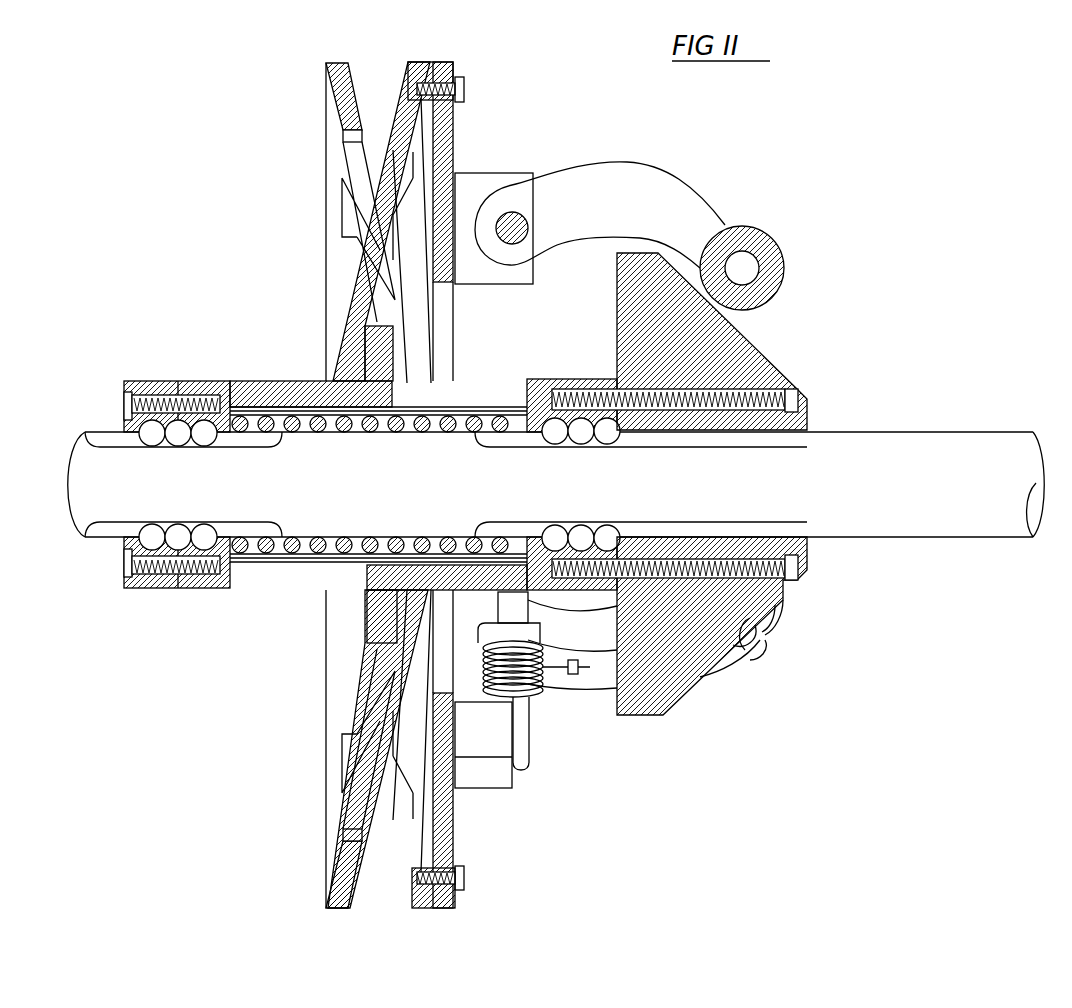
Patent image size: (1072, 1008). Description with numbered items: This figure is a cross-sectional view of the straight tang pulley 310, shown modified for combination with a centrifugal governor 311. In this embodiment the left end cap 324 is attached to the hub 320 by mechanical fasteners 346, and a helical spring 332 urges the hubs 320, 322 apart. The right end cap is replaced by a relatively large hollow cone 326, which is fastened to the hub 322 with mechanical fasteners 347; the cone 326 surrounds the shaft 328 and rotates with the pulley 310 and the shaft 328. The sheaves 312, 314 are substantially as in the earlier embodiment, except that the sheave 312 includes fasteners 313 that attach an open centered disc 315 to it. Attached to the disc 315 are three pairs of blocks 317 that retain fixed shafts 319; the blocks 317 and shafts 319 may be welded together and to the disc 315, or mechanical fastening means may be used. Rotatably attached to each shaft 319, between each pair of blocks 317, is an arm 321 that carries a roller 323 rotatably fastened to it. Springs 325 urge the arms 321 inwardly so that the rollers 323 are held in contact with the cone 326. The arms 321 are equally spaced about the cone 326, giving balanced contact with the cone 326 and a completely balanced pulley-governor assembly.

The pulley 310 is at (283, 205).
The governor 311 is at (871, 233).
The sheave 312 is at (402, 94).
The fasteners 313 is at (462, 92).
The sheave 314 is at (335, 110).
The open centered disc 315 is at (455, 140).
The blocks 317 is at (470, 176).
The fixed shafts 319 is at (520, 215).
The hub 320 is at (229, 381).
The arm 321 is at (700, 186).
The hub 322 is at (540, 380).
The roller 323 is at (778, 251).
The left end cap 324 is at (137, 464).
The springs 325 is at (540, 692).
The hollow cone 326 is at (760, 357).
The shaft 328 is at (910, 430).
The helical spring 332 is at (306, 565).
The mechanical fasteners 346 is at (148, 381).
The mechanical fasteners 347 is at (800, 399).